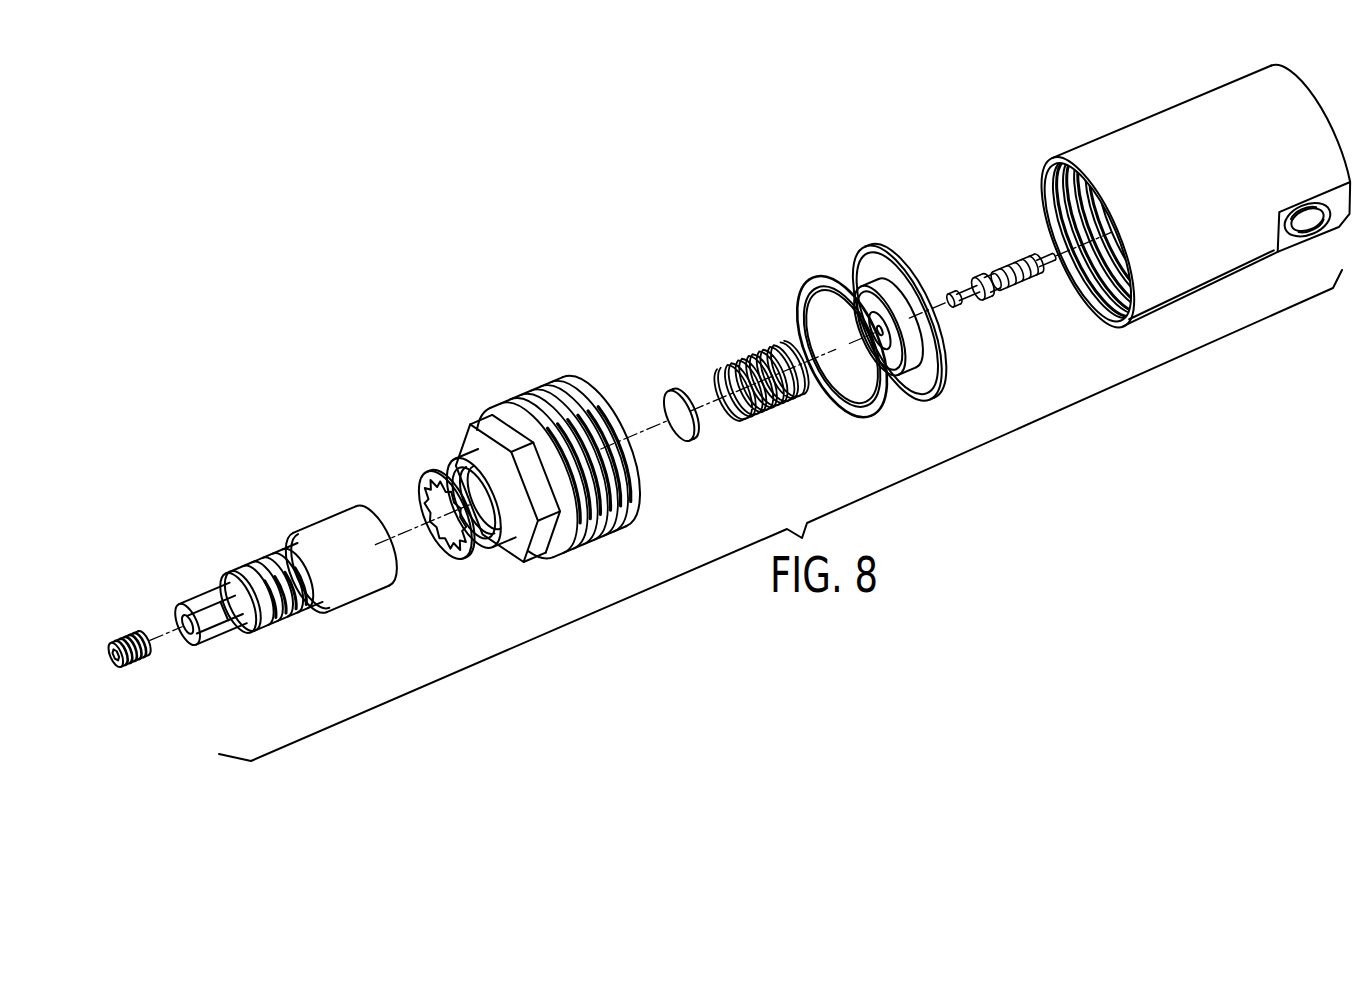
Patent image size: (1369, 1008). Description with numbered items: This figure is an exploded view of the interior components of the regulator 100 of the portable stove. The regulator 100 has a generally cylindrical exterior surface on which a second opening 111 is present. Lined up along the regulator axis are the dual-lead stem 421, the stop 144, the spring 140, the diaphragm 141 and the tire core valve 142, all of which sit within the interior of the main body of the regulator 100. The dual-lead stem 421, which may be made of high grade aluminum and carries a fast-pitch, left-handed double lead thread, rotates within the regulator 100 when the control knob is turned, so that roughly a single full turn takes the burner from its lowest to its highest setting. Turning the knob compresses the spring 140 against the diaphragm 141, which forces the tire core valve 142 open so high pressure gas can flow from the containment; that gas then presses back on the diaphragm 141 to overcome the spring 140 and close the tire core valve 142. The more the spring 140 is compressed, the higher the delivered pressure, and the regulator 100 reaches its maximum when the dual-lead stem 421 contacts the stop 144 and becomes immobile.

The regulator 100 is at (1173, 133).
The second opening 111 is at (1303, 230).
The spring 140 is at (775, 403).
The diaphragm 141 is at (865, 252).
The tire core valve 142 is at (995, 292).
The stop 144 is at (427, 470).
The dual-lead stem 421 is at (347, 588).